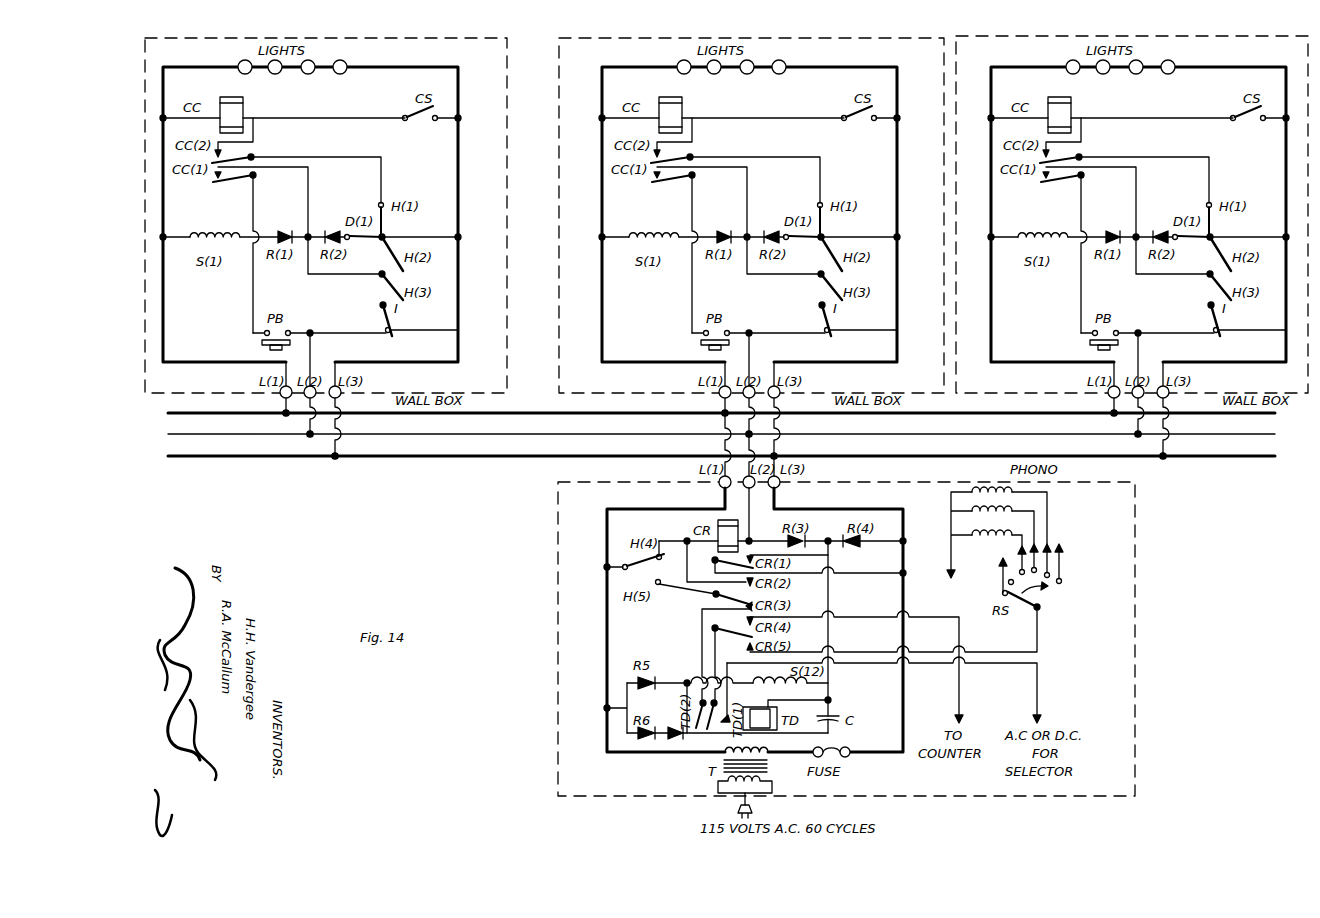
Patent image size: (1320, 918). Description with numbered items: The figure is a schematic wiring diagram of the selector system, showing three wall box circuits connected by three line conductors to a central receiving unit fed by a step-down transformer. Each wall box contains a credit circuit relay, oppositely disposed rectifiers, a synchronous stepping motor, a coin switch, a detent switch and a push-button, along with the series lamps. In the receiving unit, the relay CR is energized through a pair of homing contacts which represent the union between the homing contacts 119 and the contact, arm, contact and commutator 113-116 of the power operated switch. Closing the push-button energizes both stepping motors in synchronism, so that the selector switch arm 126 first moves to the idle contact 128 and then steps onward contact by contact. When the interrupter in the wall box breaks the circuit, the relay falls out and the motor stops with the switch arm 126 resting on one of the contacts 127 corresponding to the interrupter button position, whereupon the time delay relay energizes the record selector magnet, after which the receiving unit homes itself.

The commutator, contact, arm and contact of the power operated switch 113-116 is at (606, 567).
The homing contacts 119 is at (660, 554).
The selector switch arm 126 is at (1040, 606).
The contacts 127 is at (1050, 574).
The idle contact 128 is at (1008, 583).